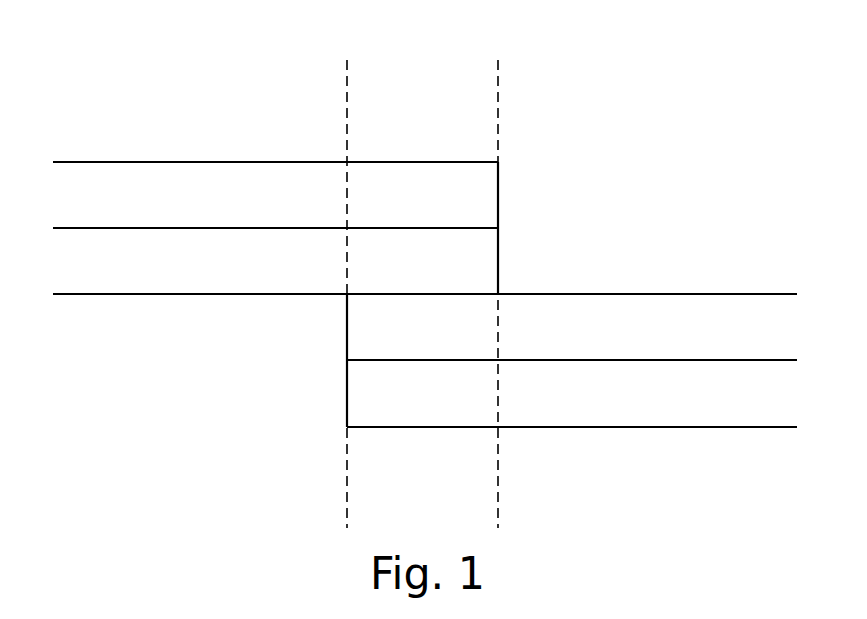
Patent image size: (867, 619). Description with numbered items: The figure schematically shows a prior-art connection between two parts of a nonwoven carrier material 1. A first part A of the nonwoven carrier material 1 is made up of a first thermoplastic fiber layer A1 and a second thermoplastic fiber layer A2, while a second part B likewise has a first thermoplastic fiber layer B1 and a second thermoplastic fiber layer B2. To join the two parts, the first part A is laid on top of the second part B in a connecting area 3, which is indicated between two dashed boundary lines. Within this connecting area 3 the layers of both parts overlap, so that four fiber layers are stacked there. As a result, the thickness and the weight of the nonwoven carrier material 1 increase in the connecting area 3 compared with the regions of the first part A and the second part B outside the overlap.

The nonwoven carrier material 1 is at (425, 248).
The connecting area 3 is at (360, 65).
The first part A is at (275, 147).
The first thermoplastic fiber layer A1 is at (275, 212).
The second thermoplastic fiber layer A2 is at (200, 280).
The second part B is at (572, 280).
The first thermoplastic fiber layer B1 is at (572, 343).
The second thermoplastic fiber layer B2 is at (572, 411).